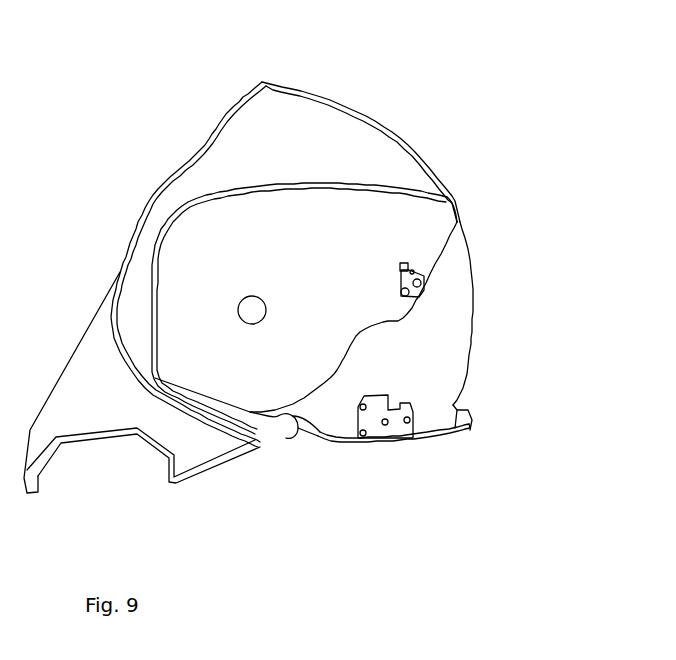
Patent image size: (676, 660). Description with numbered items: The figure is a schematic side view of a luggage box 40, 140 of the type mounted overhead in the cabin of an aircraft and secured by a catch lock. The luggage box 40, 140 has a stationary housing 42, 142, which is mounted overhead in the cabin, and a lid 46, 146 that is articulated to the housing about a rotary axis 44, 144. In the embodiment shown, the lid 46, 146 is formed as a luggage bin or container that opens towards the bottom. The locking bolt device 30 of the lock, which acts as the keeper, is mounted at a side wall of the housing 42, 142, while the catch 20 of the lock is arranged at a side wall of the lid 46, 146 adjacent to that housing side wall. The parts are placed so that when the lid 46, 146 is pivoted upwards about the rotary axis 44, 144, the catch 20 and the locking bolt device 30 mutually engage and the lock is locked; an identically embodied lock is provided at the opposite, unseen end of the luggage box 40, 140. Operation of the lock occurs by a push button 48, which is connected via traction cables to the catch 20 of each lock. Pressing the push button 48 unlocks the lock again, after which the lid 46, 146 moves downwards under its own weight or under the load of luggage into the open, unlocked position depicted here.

The luggage box 40 is at (605, 73).
The luggage box 140 is at (314, 268).
The housing 42 is at (200, 146).
The housing 142 is at (246, 264).
The rotary axis 44 is at (240, 302).
The rotary axis 144 is at (149, 257).
The lid 46 is at (600, 287).
The lid 146 is at (425, 317).
The locking bolt device 30 is at (425, 265).
The catch 20 is at (420, 418).
The push button 48 is at (247, 440).